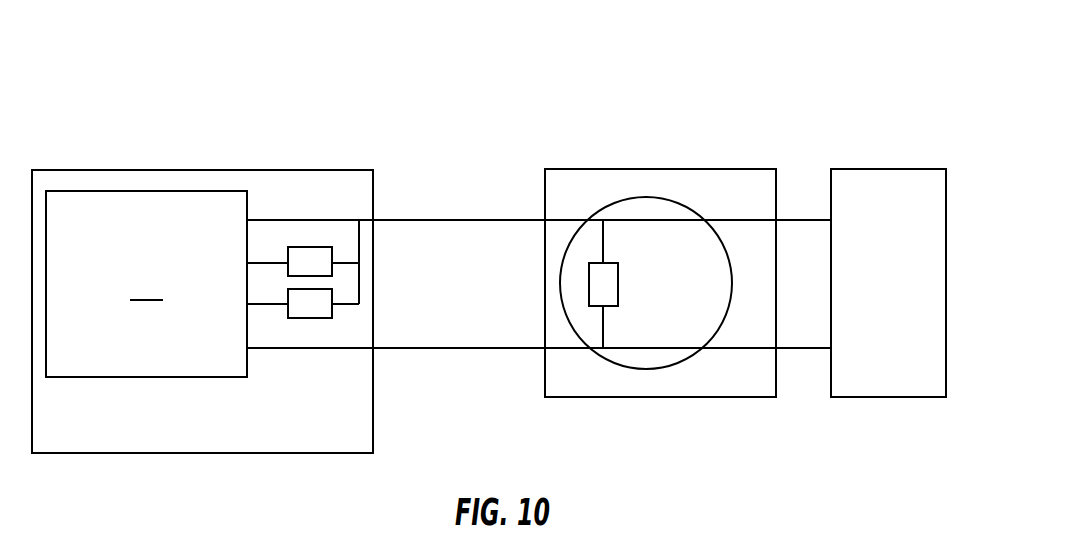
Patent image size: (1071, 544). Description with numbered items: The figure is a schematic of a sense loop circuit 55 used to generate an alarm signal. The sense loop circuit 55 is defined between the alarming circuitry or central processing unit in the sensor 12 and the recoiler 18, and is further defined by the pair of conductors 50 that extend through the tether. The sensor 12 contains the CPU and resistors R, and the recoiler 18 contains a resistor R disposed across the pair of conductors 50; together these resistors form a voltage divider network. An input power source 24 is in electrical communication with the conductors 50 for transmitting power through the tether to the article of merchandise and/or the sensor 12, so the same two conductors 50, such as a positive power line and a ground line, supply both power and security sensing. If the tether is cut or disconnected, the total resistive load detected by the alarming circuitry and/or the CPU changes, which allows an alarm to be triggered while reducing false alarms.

The sensor 12 is at (147, 453).
The recoiler 18 is at (698, 169).
The input power source 24 is at (897, 169).
The conductors 50 is at (446, 336).
The sense loop circuit 55 is at (596, 216).